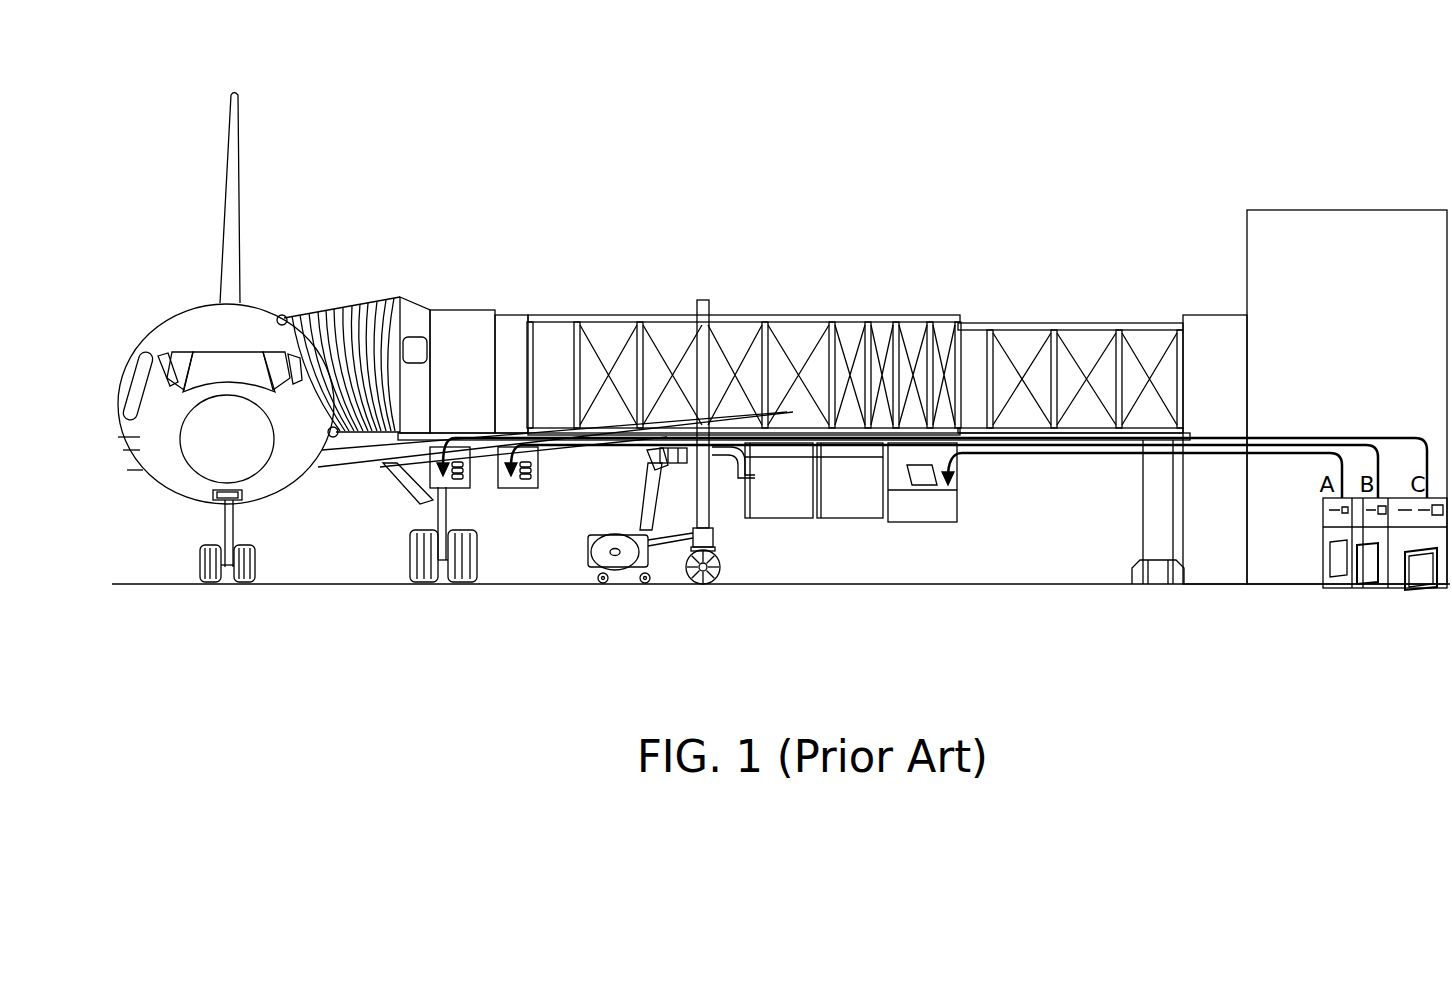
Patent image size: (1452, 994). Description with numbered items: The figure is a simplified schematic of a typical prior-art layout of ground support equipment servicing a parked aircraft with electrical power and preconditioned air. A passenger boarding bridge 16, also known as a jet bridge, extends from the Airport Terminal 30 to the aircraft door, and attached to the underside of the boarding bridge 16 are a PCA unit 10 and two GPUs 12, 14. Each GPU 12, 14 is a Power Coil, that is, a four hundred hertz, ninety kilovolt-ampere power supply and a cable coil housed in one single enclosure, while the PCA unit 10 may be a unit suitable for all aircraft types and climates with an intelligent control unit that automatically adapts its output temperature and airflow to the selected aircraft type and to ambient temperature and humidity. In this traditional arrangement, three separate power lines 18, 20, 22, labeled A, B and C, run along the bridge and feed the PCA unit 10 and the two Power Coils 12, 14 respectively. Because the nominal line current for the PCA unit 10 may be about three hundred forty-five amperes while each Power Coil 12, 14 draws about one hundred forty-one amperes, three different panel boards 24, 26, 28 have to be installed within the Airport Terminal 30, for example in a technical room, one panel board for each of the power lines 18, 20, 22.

The PCA unit 10 is at (860, 507).
The GPU 12 is at (463, 478).
The GPU 14 is at (532, 478).
The passenger boarding bridge 16 is at (830, 368).
The power line 18 is at (988, 450).
The power line 20 is at (1040, 446).
The power line 22 is at (1087, 441).
The panel board 24 is at (1325, 575).
The panel board 26 is at (1363, 582).
The panel board 28 is at (1399, 582).
The Airport Terminal 30 is at (1262, 222).